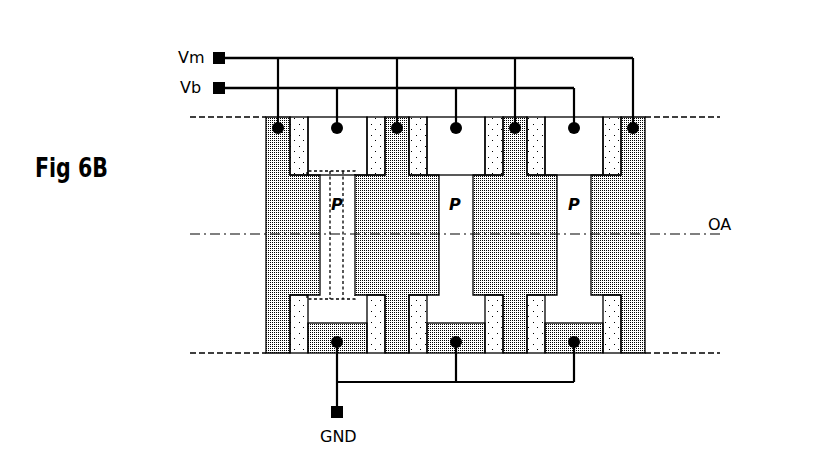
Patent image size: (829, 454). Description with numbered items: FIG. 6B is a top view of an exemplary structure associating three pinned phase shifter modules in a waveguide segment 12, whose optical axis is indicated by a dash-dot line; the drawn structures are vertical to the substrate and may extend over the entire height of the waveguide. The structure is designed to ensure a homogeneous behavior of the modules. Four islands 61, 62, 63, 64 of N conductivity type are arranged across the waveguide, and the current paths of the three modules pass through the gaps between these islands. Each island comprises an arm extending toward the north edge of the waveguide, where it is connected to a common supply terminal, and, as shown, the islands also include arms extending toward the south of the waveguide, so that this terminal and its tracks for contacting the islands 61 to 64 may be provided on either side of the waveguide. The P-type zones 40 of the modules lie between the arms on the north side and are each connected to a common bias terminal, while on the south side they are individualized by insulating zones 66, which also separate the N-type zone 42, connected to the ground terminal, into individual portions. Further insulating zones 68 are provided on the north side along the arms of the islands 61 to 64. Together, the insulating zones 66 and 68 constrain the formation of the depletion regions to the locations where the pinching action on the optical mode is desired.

The waveguide segment 12 is at (692, 117).
The P-type zone 40 is at (346, 160).
The N-type zone 42 is at (563, 352).
The island 61 is at (302, 283).
The island 62 is at (406, 283).
The island 63 is at (524, 283).
The island 64 is at (627, 283).
The insulating zones 66 is at (372, 353).
The insulating zones 68 is at (373, 125).